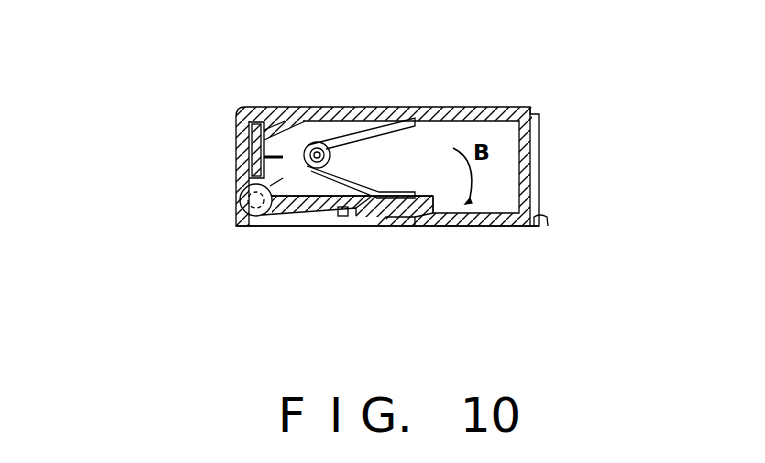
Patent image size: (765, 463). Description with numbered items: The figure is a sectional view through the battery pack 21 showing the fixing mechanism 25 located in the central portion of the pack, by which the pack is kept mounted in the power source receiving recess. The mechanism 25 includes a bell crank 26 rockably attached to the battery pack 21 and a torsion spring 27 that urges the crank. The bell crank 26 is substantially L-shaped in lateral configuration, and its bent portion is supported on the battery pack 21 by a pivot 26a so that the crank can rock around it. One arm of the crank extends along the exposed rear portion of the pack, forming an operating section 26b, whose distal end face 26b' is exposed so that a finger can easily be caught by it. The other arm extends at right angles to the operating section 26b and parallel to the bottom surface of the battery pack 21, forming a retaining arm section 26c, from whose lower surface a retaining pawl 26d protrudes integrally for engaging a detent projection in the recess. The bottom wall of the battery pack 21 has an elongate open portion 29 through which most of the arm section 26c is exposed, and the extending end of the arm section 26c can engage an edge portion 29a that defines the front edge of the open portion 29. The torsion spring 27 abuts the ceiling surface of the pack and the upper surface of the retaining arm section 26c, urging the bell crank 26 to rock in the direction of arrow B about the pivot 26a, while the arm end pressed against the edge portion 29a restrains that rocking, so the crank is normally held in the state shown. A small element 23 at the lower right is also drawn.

The battery pack 21 is at (481, 107).
The foot 23 is at (546, 212).
The fixing mechanism 25 is at (264, 157).
The bell crank 26 is at (240, 211).
The pivot 26a is at (262, 226).
The operating section 26b is at (208, 145).
The distal end face 26b' is at (269, 96).
The retaining arm section 26c is at (346, 226).
The retaining pawl 26d is at (382, 226).
The torsion spring 27 is at (338, 134).
The open portion 29 is at (333, 216).
The edge portion 29a is at (433, 226).